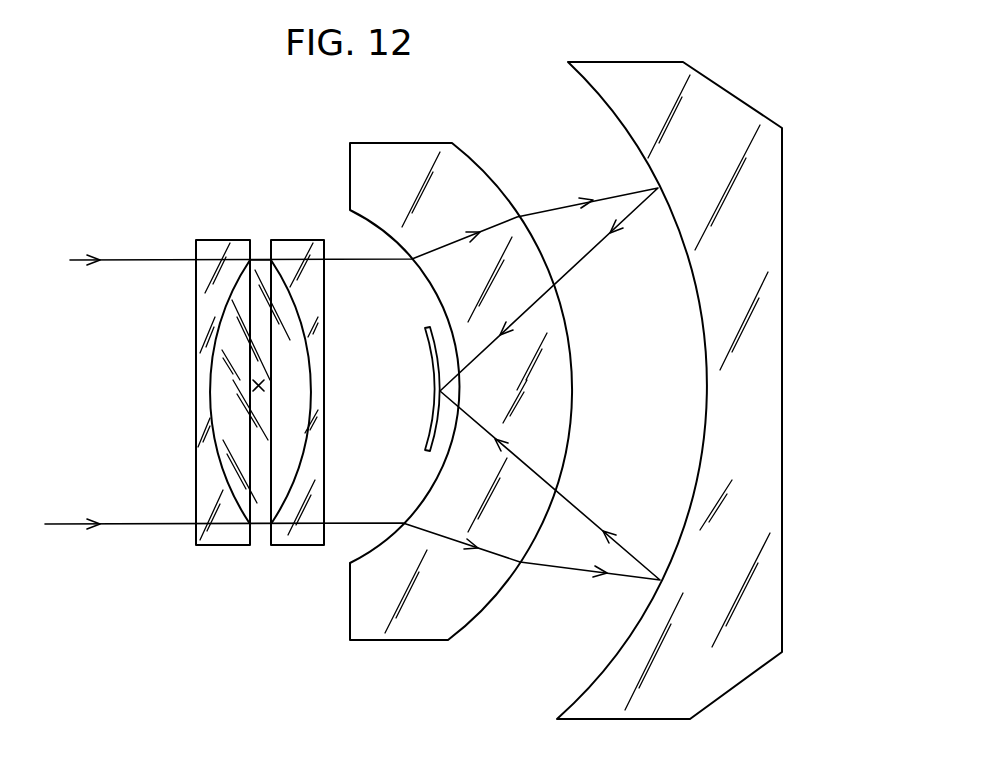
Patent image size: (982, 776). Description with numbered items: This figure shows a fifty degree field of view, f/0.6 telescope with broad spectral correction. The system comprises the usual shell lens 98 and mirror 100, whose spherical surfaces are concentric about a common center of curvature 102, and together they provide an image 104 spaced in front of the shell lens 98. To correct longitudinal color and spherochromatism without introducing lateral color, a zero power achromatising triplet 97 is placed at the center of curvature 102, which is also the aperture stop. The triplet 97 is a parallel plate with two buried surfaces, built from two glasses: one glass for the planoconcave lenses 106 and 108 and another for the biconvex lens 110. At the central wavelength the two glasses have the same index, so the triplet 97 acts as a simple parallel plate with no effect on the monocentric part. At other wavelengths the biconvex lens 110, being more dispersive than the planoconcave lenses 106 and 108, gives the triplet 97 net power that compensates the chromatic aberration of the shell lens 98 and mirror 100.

The achromatising triplet 97 is at (256, 233).
The shell lens 98 is at (496, 184).
The mirror 100 is at (700, 316).
The center of curvature 102 is at (262, 388).
The image 104 is at (427, 424).
The planoconcave lens 106 is at (205, 478).
The planoconcave lens 108 is at (310, 478).
The biconvex lens 110 is at (281, 463).